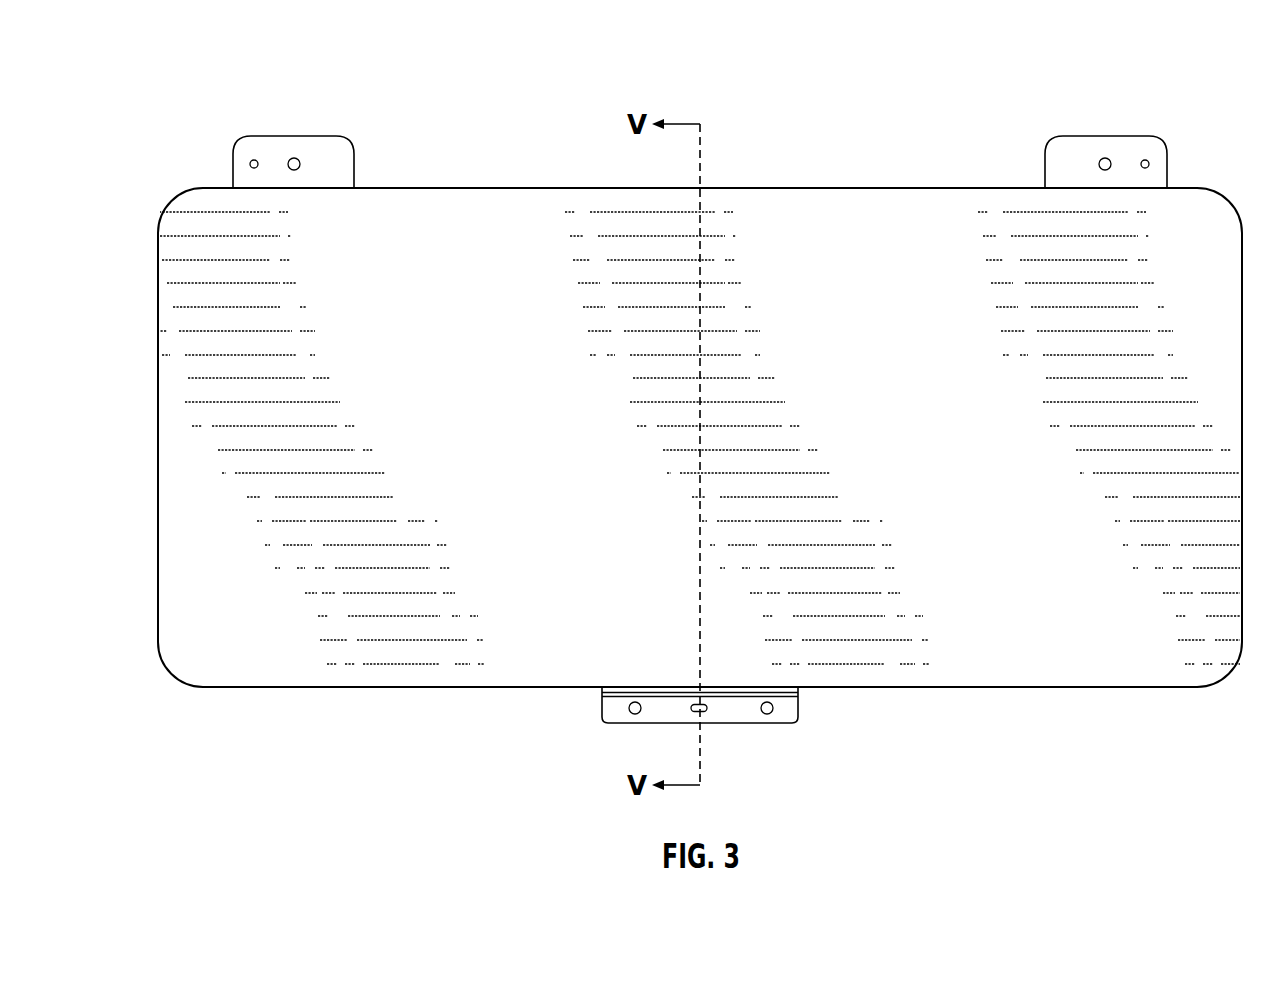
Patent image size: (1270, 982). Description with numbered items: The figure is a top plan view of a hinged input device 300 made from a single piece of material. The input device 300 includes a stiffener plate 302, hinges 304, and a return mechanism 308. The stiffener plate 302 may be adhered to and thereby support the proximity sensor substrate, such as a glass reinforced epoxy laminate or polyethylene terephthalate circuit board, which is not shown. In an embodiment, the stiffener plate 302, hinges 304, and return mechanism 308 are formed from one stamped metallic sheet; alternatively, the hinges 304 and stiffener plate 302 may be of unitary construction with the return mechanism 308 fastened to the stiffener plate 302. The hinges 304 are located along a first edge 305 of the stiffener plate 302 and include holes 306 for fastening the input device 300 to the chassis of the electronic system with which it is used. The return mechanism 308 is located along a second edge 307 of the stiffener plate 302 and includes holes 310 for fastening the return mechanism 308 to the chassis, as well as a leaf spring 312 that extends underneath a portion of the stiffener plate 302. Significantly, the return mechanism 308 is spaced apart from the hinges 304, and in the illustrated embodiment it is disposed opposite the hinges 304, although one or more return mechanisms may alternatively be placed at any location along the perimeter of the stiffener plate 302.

The hinged input device 300 is at (187, 82).
The stiffener plate 302 is at (515, 200).
The hinges 304 is at (300, 136).
The first edge 305 is at (800, 188).
The holes 306 is at (1106, 158).
The second edge 307 is at (1050, 688).
The return mechanism 308 is at (798, 712).
The holes 310 is at (630, 713).
The leaf spring 312 is at (602, 693).